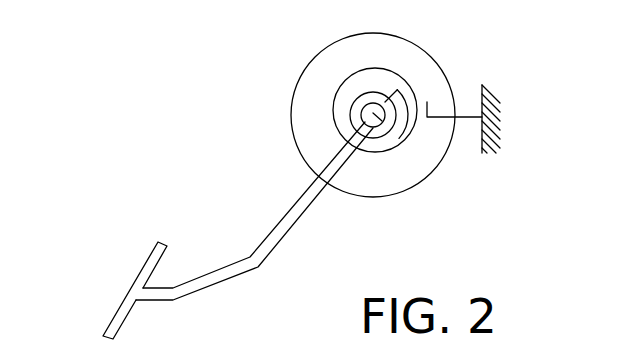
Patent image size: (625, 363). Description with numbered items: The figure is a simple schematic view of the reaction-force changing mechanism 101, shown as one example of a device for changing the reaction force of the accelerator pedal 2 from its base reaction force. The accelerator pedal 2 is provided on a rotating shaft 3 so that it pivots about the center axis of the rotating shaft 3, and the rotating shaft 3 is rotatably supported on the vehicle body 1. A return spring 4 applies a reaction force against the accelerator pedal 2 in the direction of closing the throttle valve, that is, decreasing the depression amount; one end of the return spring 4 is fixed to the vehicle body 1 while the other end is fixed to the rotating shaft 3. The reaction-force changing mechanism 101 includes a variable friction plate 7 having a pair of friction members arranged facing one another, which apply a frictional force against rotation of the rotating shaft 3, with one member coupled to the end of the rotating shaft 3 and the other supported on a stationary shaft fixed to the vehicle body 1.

The reaction-force changing mechanism 101 is at (133, 141).
The vehicle body 1 is at (497, 93).
The accelerator pedal 2 is at (104, 300).
The rotating shaft 3 is at (396, 137).
The return spring 4 is at (367, 68).
The variable friction plate 7 is at (291, 61).